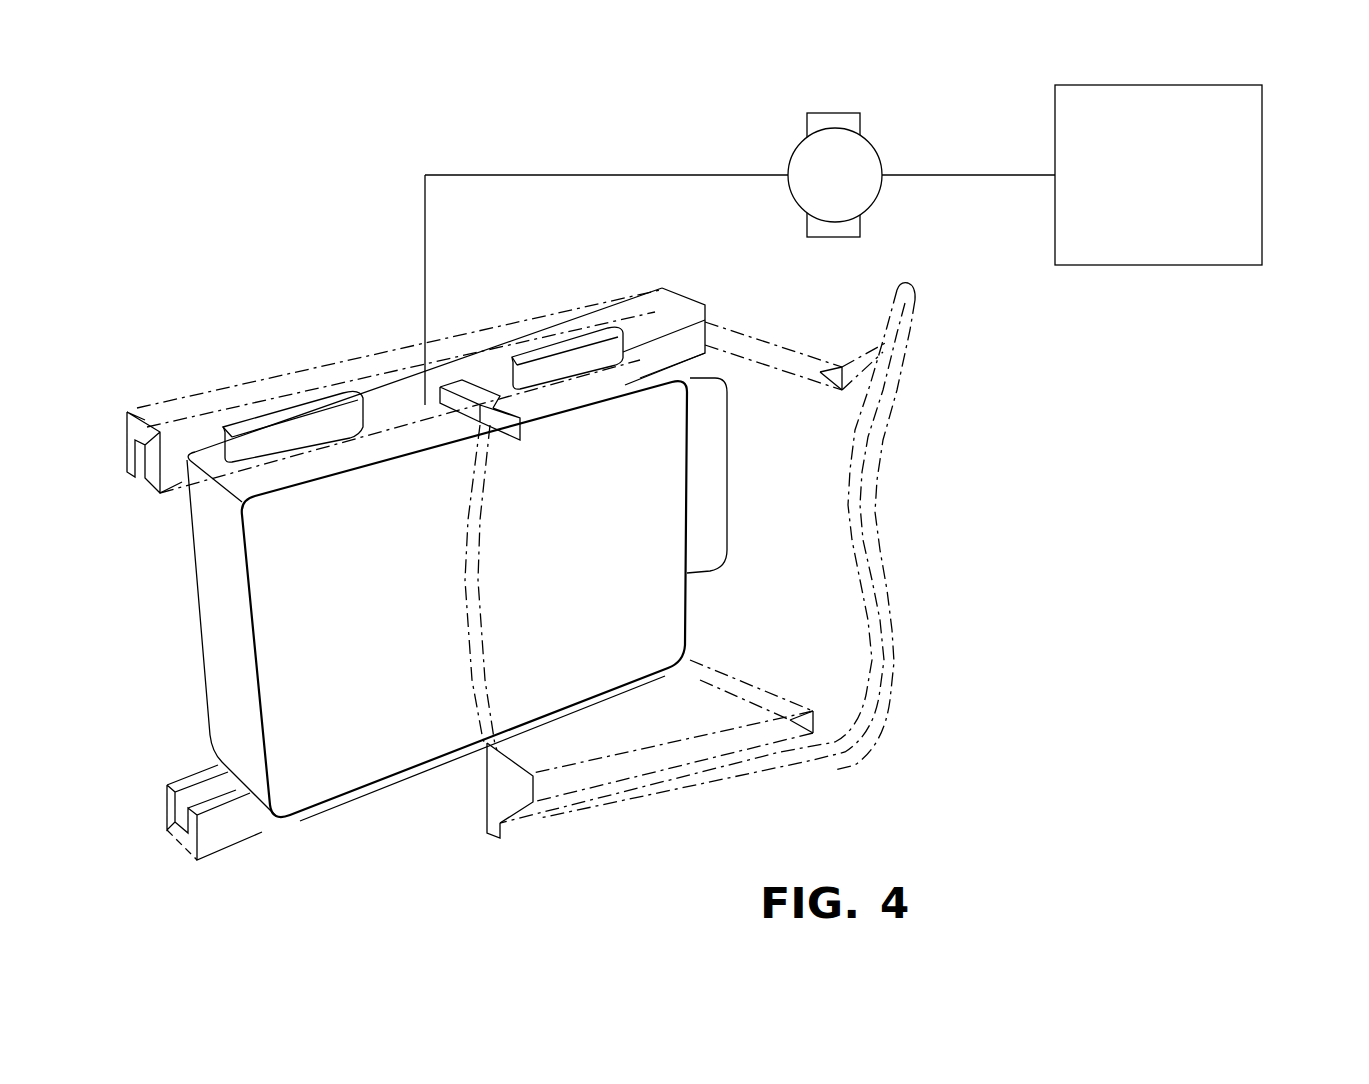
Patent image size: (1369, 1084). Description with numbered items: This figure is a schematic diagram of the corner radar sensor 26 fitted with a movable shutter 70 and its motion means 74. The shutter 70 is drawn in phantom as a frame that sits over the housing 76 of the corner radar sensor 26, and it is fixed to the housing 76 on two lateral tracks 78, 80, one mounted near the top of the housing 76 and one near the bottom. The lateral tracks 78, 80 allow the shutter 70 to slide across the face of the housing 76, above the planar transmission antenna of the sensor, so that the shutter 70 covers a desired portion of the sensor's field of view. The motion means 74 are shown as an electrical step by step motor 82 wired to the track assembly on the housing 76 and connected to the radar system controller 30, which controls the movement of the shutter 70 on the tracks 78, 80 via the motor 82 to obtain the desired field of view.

The corner radar sensor 26 is at (172, 690).
The radar system controller 30 is at (1262, 100).
The shutter 70 is at (872, 505).
The motion means 74 is at (632, 108).
The housing 76 is at (347, 700).
The lateral track 78 is at (213, 406).
The lateral track 80 is at (215, 830).
The electrical step by step motor 82 is at (862, 138).